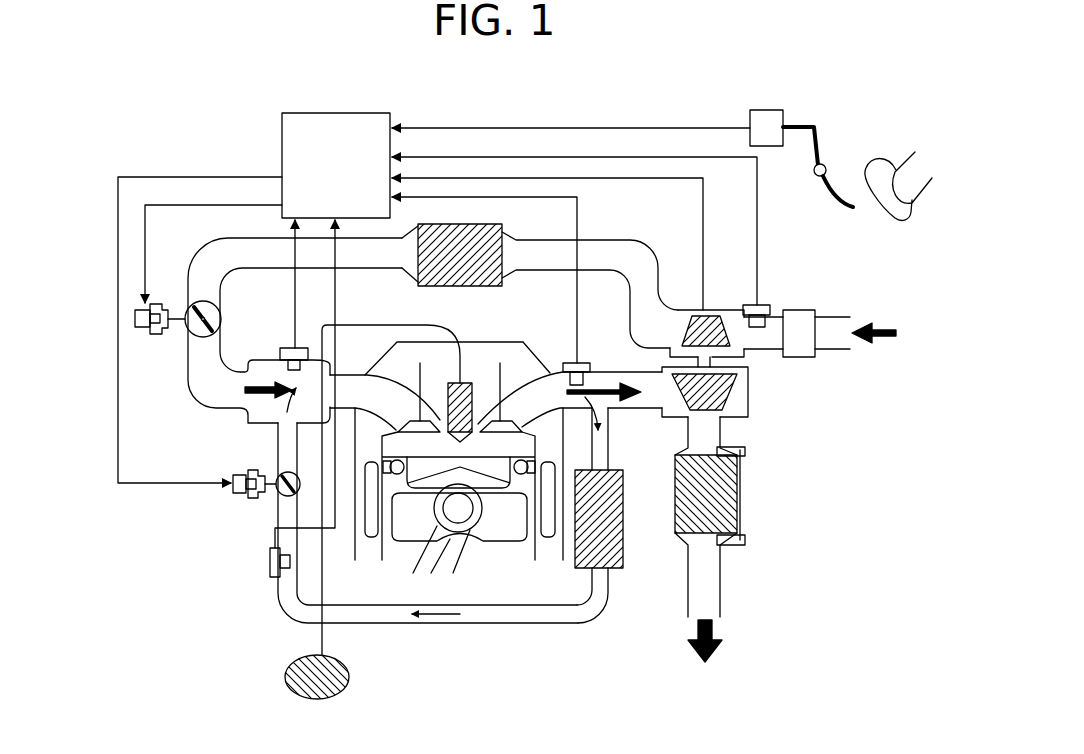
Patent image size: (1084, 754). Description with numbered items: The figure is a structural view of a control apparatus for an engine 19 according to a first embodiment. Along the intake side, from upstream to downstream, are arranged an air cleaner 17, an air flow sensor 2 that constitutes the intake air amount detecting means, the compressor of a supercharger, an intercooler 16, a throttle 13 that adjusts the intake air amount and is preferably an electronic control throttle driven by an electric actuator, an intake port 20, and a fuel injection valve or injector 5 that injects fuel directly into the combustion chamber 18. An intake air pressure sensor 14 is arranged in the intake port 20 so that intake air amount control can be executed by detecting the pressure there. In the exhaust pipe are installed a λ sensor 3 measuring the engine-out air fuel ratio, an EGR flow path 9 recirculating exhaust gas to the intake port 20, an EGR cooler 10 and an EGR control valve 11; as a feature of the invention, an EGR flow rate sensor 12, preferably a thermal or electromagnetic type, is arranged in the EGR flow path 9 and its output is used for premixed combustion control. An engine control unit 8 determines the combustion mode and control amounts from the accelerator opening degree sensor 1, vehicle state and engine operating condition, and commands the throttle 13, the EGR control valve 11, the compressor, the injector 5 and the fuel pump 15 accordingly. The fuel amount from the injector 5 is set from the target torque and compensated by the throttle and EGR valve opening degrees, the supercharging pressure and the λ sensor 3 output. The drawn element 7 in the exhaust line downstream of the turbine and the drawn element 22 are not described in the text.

The accelerator opening degree sensor 1 is at (767, 110).
The air flow sensor 2 is at (757, 305).
The λ sensor 3 is at (580, 363).
The fuel injection valve 5 is at (466, 388).
The exhaust purification catalyst 7 is at (680, 515).
The engine control unit 8 is at (290, 135).
The EGR flow path 9 is at (485, 616).
The EGR cooler 10 is at (617, 565).
The EGR control valve 11 is at (248, 500).
The EGR flow rate sensor 12 is at (268, 565).
The throttle 13 is at (135, 318).
The intake air pressure sensor 14 is at (290, 350).
The fuel pump 15 is at (287, 670).
The intercooler 16 is at (492, 237).
The air cleaner 17 is at (803, 346).
The combustion chamber 18 is at (560, 443).
The engine 19 is at (512, 490).
The intake port 20 is at (210, 393).
The EGR passage downstream portion 22 is at (320, 643).